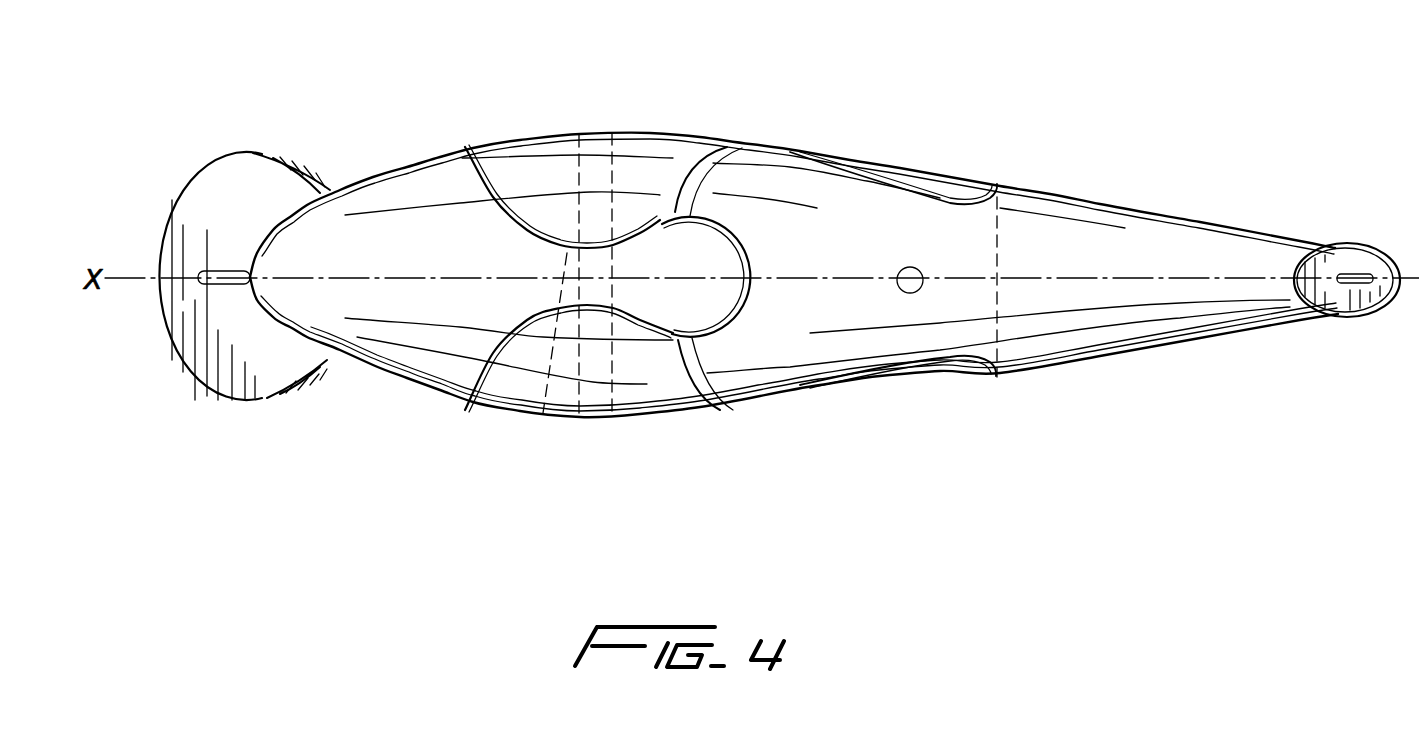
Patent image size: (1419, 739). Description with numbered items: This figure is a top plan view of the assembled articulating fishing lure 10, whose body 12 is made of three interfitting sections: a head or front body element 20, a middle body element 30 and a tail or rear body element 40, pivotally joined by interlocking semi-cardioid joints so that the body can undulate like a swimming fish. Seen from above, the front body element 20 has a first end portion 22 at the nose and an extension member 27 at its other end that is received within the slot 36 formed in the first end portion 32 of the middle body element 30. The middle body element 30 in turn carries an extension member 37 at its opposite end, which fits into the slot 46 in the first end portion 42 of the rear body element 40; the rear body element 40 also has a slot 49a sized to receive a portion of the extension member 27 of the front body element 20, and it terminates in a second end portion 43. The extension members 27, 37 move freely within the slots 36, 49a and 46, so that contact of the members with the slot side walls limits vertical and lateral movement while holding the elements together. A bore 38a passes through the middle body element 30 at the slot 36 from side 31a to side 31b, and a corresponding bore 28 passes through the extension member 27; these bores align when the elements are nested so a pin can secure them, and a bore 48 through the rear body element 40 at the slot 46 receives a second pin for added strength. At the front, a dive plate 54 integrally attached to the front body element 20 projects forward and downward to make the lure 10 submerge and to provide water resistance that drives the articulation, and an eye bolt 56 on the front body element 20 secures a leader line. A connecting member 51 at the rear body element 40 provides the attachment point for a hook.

The articulating fishing lure 10 is at (1060, 98).
The body 12 is at (588, 135).
The front body element 20 is at (373, 180).
The first end portion 22 is at (277, 327).
The extension member 27 is at (667, 305).
The bore 28 is at (543, 420).
The middle body element 30 is at (478, 147).
The side 31a is at (507, 140).
The side 31b is at (497, 420).
The first end portion 32 is at (475, 415).
The slot 36 is at (663, 220).
The extension member 37 is at (970, 185).
The bore 38a is at (612, 140).
The rear body element 40 is at (1160, 220).
The first end portion 42 is at (713, 383).
The second end portion 43 is at (1380, 295).
The slot 46 is at (882, 183).
The bore 48 is at (905, 293).
The slot 49a is at (750, 240).
The connecting member 51 is at (1345, 272).
The dive plate 54 is at (203, 358).
The eye bolt 56 is at (222, 268).